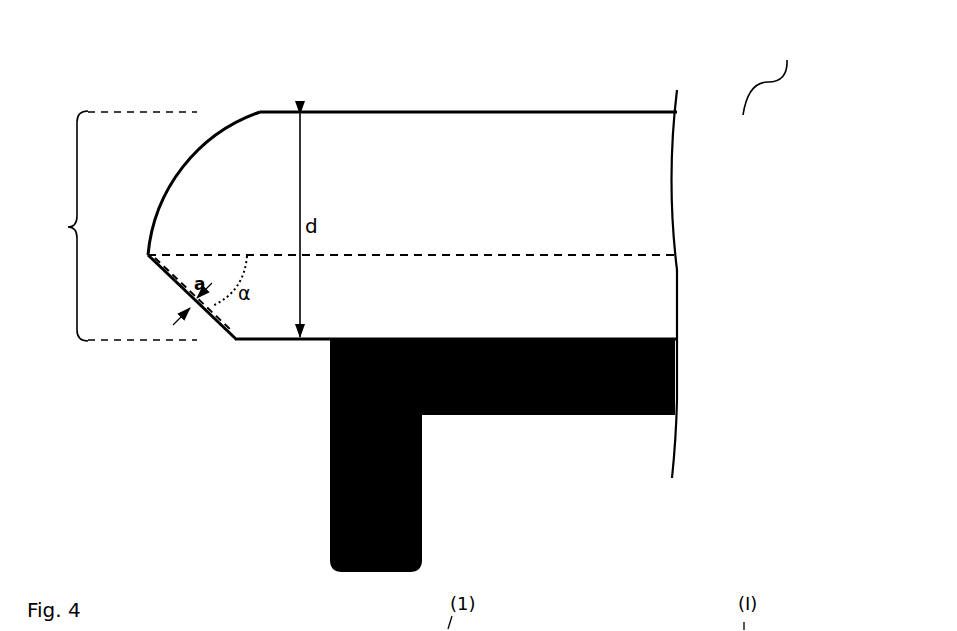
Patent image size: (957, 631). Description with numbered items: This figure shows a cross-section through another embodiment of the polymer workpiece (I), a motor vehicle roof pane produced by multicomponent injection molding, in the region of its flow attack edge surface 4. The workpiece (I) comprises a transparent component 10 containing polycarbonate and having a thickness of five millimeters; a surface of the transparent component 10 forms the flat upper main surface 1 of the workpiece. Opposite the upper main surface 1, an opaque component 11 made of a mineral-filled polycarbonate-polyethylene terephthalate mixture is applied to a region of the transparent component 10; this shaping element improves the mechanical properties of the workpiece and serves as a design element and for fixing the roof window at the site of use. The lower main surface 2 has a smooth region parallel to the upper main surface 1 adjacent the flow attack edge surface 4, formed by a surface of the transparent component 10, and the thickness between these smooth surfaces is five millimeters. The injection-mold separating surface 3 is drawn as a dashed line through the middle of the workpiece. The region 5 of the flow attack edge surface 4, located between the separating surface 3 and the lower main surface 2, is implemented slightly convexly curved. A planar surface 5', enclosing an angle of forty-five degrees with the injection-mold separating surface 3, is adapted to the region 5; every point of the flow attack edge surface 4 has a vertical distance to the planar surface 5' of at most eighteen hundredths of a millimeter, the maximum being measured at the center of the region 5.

The upper main surface 1 is at (457, 108).
The transparent component 10 is at (527, 182).
The polymer workpiece I is at (770, 75).
The injection-mold separating surface 3 is at (613, 253).
The flow attack edge surface 4 is at (144, 226).
The region of the flow attack edge surface 5 is at (170, 297).
The planar surface 5' is at (184, 330).
The lower main surface 2 is at (248, 342).
The opaque component 11 is at (330, 440).